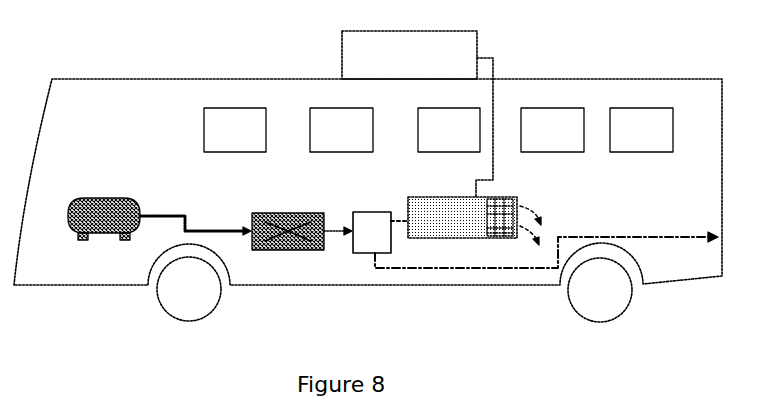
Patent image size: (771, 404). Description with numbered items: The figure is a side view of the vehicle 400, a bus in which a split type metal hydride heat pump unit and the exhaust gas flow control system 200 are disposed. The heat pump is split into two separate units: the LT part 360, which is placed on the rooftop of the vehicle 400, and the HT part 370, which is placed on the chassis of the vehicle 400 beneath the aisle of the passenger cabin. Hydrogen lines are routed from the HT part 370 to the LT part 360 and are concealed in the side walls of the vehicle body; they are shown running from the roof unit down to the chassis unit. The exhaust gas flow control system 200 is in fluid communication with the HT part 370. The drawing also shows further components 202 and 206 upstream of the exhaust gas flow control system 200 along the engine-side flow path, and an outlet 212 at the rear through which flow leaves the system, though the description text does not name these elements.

The vehicle 400 is at (168, 72).
The LT part 360 is at (334, 40).
The fuel tank 202 is at (104, 243).
The filter / mixer 206 is at (282, 252).
The exhaust gas flow control system 200 is at (366, 255).
The HT part 370 is at (465, 240).
The exhaust outlet line 212 is at (697, 244).